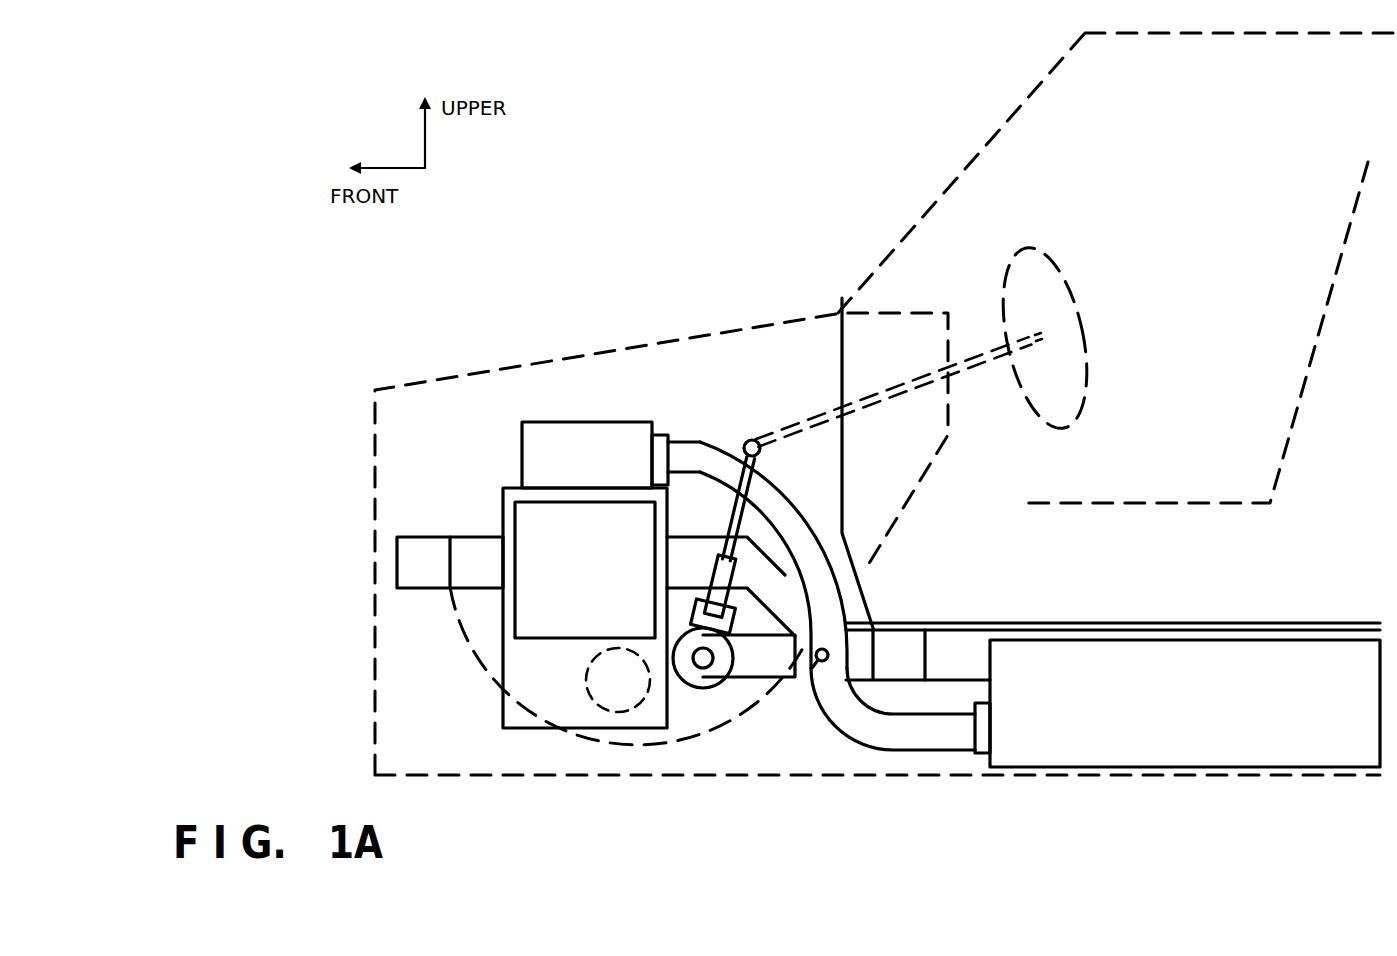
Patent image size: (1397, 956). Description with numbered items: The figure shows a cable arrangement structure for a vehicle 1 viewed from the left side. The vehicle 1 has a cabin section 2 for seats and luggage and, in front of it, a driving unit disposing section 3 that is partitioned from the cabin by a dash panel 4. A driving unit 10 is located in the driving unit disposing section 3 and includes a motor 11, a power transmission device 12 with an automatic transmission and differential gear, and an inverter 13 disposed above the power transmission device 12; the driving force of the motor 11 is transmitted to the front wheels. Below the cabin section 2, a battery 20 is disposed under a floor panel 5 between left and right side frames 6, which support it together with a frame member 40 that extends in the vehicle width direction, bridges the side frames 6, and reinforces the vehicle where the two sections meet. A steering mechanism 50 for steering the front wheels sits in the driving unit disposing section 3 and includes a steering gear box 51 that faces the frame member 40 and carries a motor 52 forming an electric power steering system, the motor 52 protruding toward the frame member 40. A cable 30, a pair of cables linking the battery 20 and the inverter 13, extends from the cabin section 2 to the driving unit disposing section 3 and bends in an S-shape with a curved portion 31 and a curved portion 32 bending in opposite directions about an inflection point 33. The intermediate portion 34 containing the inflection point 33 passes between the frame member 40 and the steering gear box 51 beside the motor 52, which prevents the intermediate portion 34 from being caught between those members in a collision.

The vehicle 1 is at (924, 130).
The cabin section 2 is at (922, 246).
The driving unit disposing section 3 is at (470, 400).
The dash panel 4 is at (843, 387).
The floor panel 5 is at (1045, 622).
The side frames 6 is at (960, 652).
The driving unit 10 is at (590, 563).
The motor 11 is at (527, 612).
The power transmission device 12 is at (540, 708).
The inverter 13 is at (627, 432).
The battery 20 is at (1230, 682).
The cable 30 is at (835, 605).
The curved portion 31 is at (720, 455).
The curved portion 32 is at (866, 742).
The inflection point 33 is at (823, 665).
The intermediate portion 34 is at (855, 663).
The frame member 40 is at (900, 655).
The steering mechanism 50 is at (627, 663).
The steering gear box 51 is at (705, 689).
The motor 52 is at (757, 680).